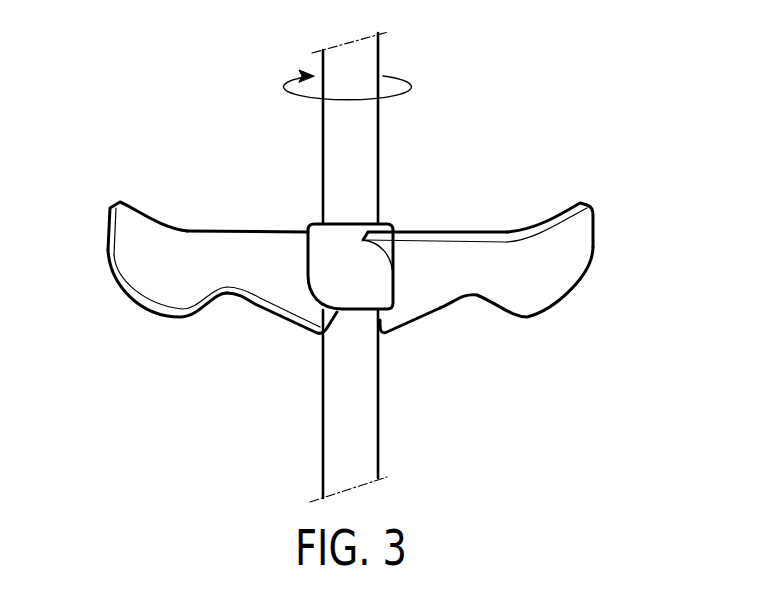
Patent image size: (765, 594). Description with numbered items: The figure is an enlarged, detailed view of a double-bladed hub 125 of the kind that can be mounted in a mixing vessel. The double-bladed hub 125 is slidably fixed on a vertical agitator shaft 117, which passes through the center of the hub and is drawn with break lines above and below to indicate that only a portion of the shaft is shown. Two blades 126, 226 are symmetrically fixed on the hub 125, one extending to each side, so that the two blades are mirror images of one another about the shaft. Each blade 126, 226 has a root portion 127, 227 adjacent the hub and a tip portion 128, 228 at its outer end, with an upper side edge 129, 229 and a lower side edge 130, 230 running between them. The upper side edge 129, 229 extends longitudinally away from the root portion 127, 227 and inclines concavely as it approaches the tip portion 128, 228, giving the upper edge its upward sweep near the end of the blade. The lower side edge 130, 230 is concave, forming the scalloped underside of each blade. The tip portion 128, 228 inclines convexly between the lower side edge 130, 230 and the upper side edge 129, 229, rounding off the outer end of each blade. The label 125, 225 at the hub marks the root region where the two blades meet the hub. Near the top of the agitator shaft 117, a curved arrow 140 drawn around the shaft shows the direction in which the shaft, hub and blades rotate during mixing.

The agitator shaft 117 is at (367, 147).
The double-bladed hub 125 is at (320, 257).
The second blade root 225 is at (330, 204).
The blade 126 is at (187, 247).
The root portion 127 is at (297, 288).
The tip portion 128 is at (110, 230).
The upper side edge 129 is at (240, 243).
The lower side edge 130 is at (243, 297).
The arrow 140 is at (414, 83).
The blade 226 is at (512, 247).
The root portion 227 is at (407, 288).
The tip portion 228 is at (590, 230).
The upper side edge 229 is at (462, 240).
The lower side edge 230 is at (457, 296).